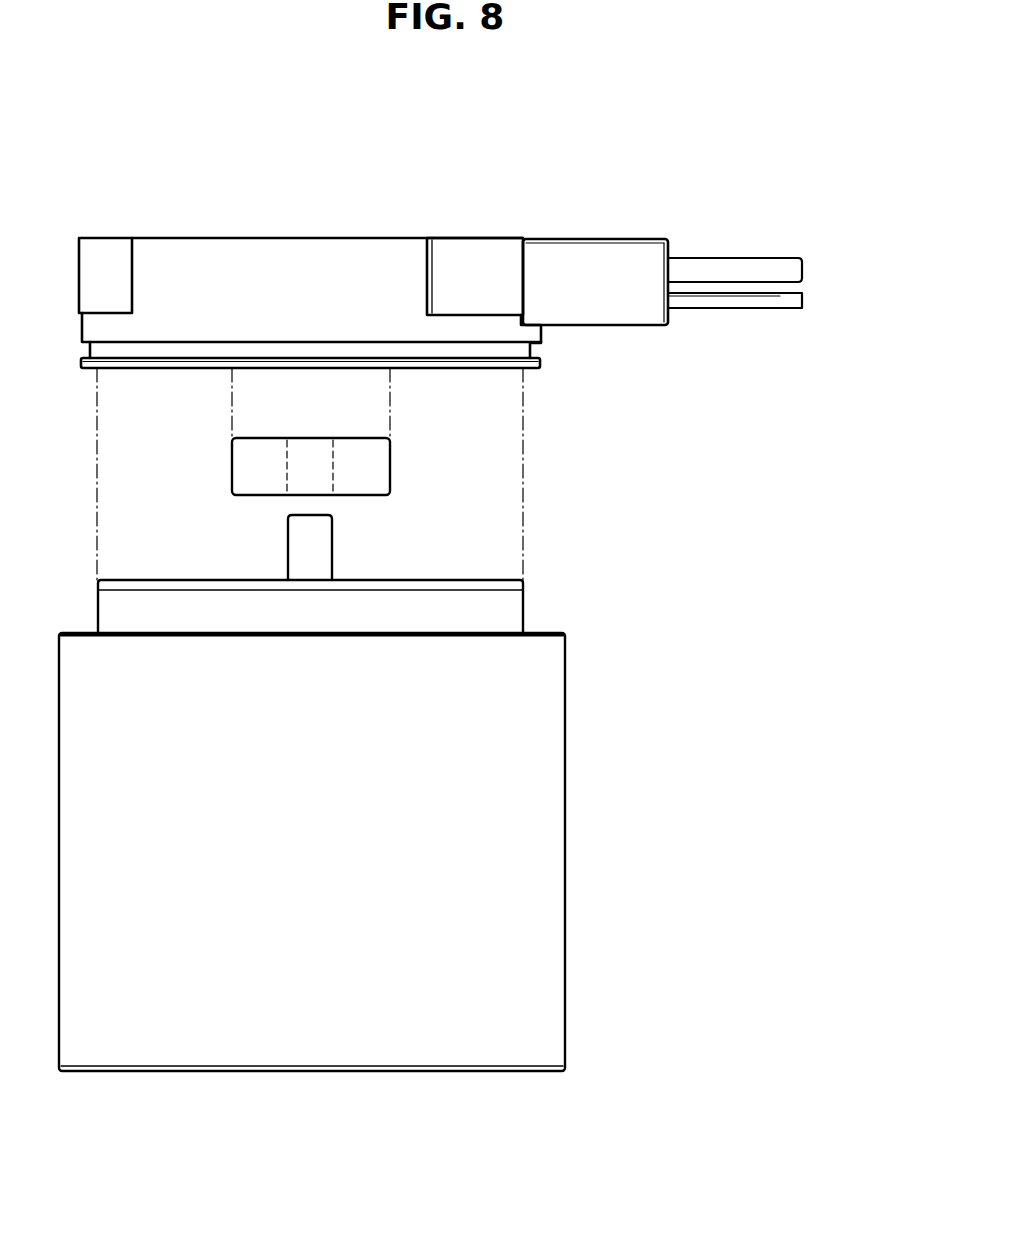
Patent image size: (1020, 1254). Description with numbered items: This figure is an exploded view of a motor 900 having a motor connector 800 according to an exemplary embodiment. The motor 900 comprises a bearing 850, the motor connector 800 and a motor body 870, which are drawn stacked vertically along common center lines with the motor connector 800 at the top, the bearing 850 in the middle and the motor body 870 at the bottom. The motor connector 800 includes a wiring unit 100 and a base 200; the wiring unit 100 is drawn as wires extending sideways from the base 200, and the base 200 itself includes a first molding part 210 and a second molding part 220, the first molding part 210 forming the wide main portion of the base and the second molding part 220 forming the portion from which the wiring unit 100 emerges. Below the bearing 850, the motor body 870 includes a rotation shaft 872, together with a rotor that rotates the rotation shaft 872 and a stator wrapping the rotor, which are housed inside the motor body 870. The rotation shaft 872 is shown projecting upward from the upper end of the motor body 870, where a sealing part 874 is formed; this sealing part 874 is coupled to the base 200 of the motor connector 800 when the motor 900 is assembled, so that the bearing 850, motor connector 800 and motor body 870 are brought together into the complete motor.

The wiring unit 100 is at (778, 252).
The base 200 is at (207, 237).
The first molding part 210 is at (320, 258).
The second molding part 220 is at (627, 258).
The motor connector 800 is at (475, 198).
The bearing 850 is at (402, 462).
The motor body 870 is at (584, 796).
The rotation shaft 872 is at (305, 553).
The sealing part 874 is at (500, 608).
The motor 900 is at (684, 520).